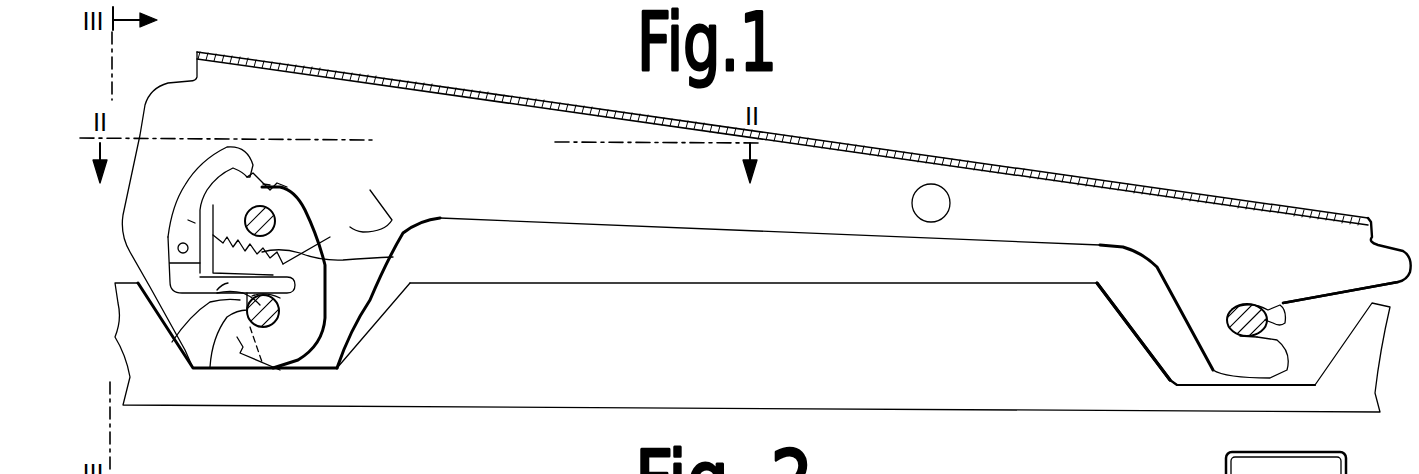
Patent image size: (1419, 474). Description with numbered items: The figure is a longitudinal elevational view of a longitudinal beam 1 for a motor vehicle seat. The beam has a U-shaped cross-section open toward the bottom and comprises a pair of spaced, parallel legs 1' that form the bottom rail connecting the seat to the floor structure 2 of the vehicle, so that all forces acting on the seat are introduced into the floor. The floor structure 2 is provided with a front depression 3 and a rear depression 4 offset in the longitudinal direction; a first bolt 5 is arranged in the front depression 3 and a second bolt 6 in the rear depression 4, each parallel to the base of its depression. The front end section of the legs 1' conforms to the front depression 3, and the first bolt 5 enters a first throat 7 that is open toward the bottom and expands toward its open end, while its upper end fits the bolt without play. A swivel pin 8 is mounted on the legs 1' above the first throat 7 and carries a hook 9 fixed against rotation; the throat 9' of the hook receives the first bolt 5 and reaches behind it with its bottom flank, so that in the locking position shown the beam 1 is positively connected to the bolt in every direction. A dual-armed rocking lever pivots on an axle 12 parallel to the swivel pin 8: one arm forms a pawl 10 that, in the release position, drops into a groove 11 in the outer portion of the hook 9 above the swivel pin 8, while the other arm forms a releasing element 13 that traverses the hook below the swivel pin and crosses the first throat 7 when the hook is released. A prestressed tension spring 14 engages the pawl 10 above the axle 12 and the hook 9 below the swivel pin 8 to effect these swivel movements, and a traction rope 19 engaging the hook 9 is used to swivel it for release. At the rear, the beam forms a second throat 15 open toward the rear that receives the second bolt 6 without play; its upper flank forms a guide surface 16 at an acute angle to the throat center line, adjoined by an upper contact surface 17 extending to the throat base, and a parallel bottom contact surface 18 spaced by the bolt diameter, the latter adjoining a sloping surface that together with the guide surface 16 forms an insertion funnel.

The longitudinal beam 1 is at (782, 138).
The legs 1' is at (766, 257).
The floor structure 2 is at (670, 363).
The front depression 3 is at (393, 283).
The rear depression 4 is at (1165, 330).
The first bolt 5 is at (243, 307).
The second bolt 6 is at (1280, 302).
The first throat 7 is at (245, 333).
The swivel pin 8 is at (287, 205).
The hook 9 is at (295, 207).
The throat of hook 9' is at (276, 378).
The pawl 10 is at (200, 179).
The groove 11 is at (270, 185).
The axle 12 is at (178, 254).
The releasing element 13 is at (222, 288).
The tension spring 14 is at (393, 257).
The second throat 15 is at (1230, 333).
The guide surface 16 is at (1338, 303).
The upper contact surface 17 is at (1247, 303).
The bottom contact surface 18 is at (1257, 335).
The traction rope 19 is at (386, 260).